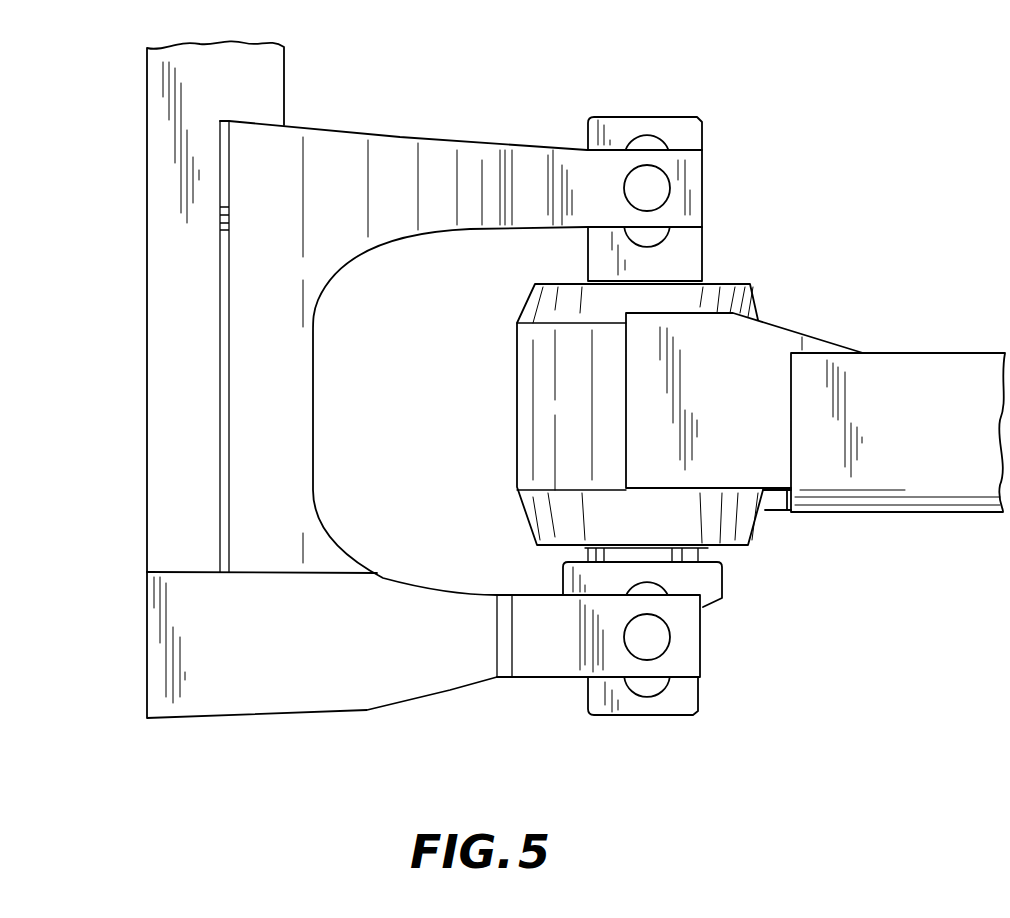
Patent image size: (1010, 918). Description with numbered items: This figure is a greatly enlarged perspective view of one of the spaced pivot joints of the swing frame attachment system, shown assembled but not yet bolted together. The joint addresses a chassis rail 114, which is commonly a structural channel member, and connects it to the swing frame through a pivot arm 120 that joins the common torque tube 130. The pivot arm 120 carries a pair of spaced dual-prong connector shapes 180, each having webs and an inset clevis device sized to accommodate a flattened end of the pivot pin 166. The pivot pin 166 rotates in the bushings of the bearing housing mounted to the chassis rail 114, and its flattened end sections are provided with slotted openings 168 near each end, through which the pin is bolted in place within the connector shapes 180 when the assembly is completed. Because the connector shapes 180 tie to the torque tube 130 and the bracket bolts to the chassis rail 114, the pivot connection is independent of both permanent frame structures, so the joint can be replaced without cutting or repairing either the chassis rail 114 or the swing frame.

The chassis rail 114 is at (942, 363).
The pivot arm 120 is at (237, 702).
The torque tube 130 is at (275, 73).
The pivot pin 166 is at (702, 125).
The slotted opening 168 is at (658, 238).
The dual-prong connector shape 180 is at (437, 150).